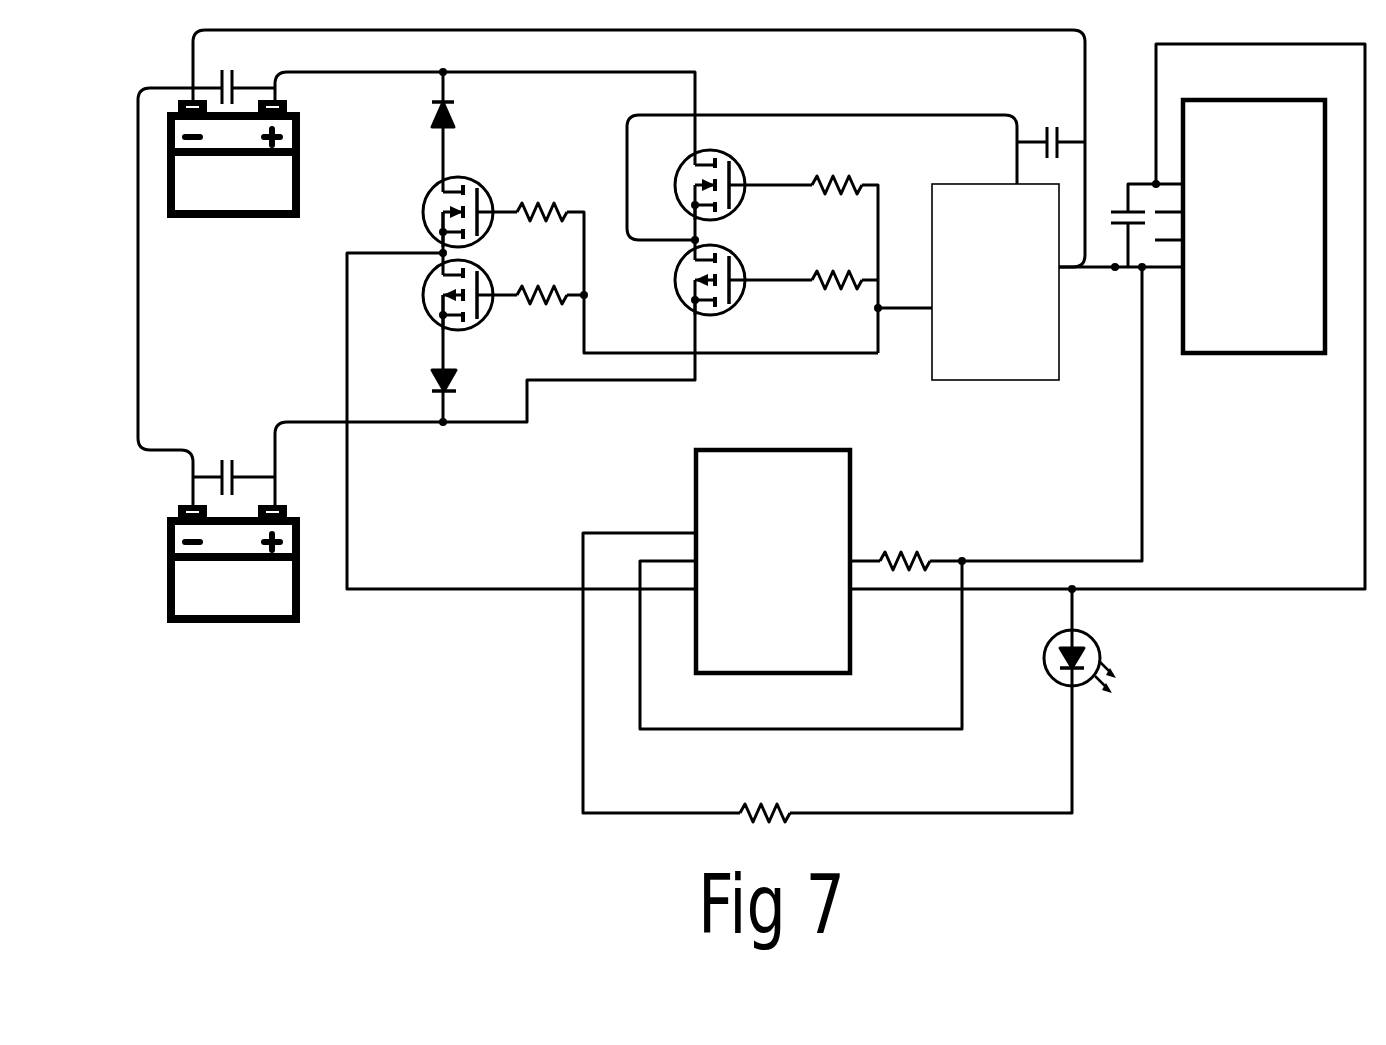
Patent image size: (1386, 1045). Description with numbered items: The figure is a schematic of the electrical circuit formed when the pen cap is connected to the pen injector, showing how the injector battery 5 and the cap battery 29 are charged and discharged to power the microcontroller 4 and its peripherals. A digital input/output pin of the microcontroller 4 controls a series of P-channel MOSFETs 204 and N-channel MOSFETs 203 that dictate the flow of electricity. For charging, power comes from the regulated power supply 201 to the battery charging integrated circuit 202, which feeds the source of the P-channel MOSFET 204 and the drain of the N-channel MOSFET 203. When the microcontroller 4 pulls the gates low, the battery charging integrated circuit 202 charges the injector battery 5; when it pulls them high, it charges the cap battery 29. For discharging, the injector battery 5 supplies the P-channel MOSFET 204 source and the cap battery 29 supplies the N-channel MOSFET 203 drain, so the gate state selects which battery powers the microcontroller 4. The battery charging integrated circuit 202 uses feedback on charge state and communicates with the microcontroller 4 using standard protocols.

The cap battery 29 is at (233, 173).
The injector battery 5 is at (233, 577).
The N-channel MOSFET 203 is at (595, 188).
The P-channel MOSFET 204 is at (588, 300).
The microcontroller 4 is at (995, 294).
The regulated power supply 201 is at (1254, 242).
The battery charging integrated circuit 202 is at (773, 578).